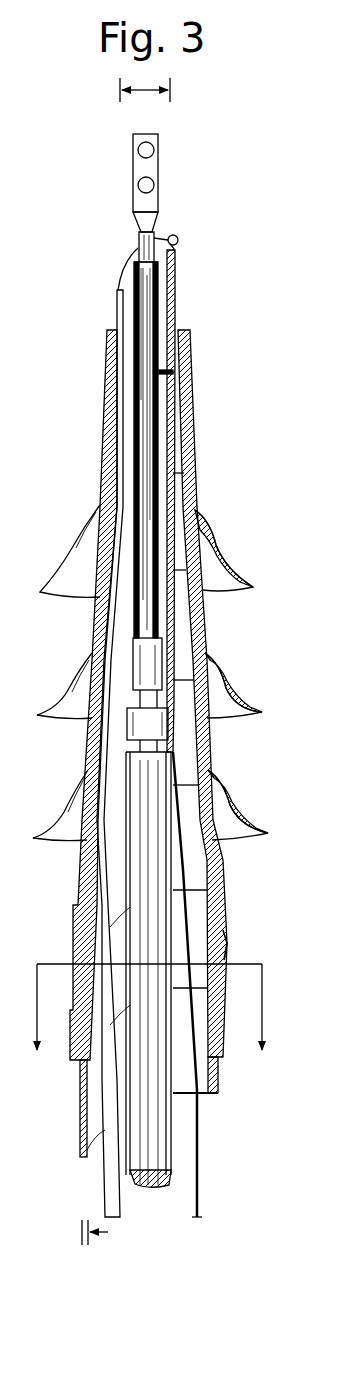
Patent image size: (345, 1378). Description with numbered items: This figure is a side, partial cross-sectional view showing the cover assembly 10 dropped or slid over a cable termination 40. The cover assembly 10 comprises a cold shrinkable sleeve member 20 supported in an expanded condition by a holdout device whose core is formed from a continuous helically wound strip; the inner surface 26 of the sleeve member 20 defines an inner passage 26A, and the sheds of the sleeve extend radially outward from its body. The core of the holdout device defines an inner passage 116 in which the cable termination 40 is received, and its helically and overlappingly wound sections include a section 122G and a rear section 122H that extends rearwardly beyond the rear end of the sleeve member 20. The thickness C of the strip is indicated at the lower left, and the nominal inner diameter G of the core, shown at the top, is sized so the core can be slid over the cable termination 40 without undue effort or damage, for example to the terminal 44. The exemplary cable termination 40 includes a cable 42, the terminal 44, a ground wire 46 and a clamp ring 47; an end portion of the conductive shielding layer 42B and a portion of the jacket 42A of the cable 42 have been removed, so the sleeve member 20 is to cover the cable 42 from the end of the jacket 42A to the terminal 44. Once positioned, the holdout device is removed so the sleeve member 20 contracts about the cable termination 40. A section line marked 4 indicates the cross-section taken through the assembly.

The cover assembly 10 is at (164, 632).
The sleeve member 20 is at (188, 365).
The inner surface 26 is at (197, 505).
The inner passage 26A is at (203, 1103).
The cable termination 40 is at (178, 165).
The cable 42 is at (181, 1108).
The jacket 42A is at (138, 893).
The conductive shielding layer 42B is at (133, 660).
The terminal 44 is at (133, 138).
The ground wire 46 is at (107, 1092).
The clamp ring 47 is at (130, 722).
The inner passage 116 is at (98, 1160).
The section 122G is at (213, 945).
The rear section 122H is at (218, 1067).
The section line 4- 4 is at (149, 1020).
The thickness C is at (80, 1232).
The nominal inner diameter G is at (145, 91).